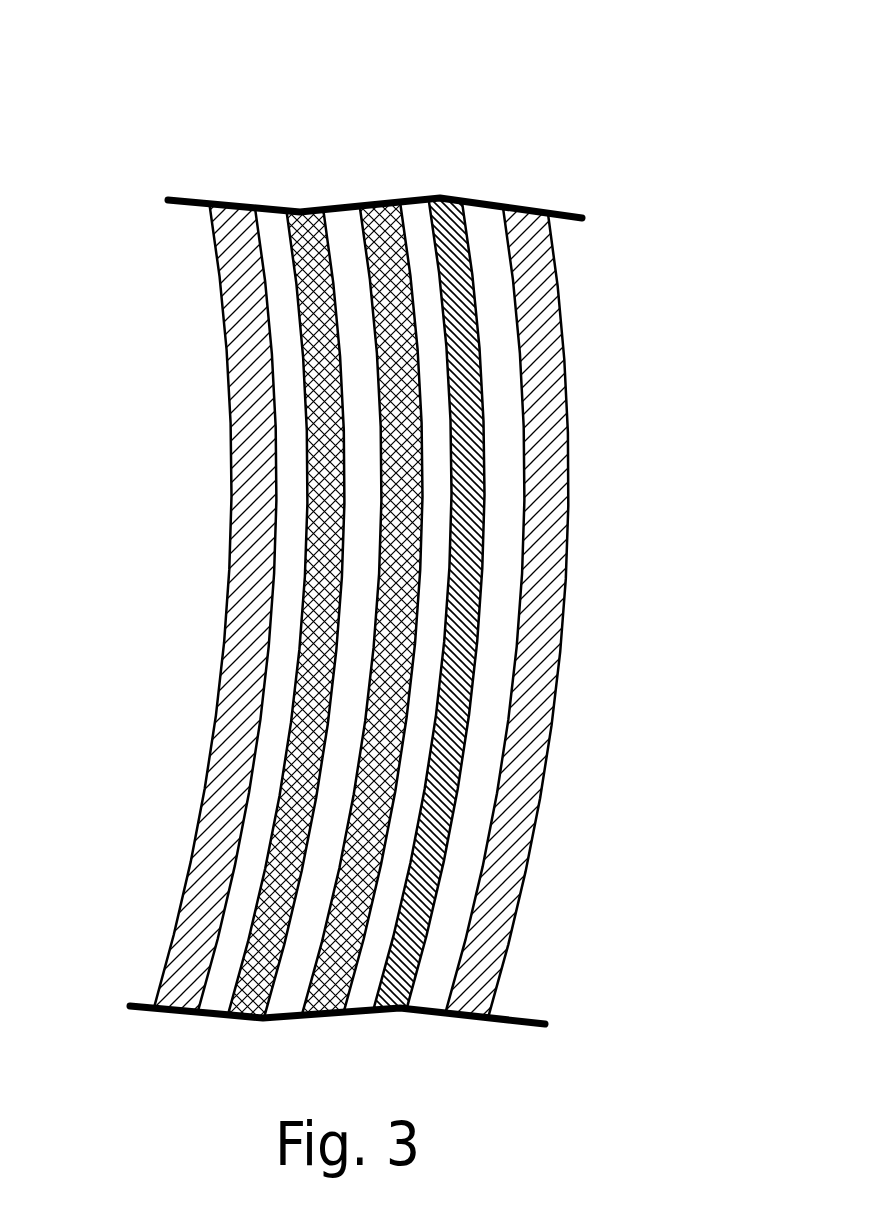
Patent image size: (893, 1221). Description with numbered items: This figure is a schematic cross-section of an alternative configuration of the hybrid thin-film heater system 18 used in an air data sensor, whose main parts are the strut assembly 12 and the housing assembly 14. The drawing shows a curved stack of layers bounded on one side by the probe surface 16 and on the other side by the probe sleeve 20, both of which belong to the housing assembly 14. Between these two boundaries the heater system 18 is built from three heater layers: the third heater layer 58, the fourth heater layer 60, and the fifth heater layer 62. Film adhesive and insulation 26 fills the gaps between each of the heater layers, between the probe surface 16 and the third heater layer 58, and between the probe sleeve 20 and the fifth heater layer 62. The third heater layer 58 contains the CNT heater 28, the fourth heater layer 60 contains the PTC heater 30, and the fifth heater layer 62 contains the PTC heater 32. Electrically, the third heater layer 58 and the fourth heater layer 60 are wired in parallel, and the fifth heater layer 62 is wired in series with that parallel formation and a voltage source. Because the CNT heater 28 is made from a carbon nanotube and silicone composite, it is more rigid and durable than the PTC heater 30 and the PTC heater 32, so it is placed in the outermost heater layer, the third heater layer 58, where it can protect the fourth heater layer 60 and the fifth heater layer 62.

The strut assembly 12 is at (426, 549).
The housing assembly 14 is at (652, 175).
The probe surface 16 is at (538, 330).
The hybrid thin-film heater system 18 is at (233, 175).
The probe sleeve 20 is at (243, 302).
The film adhesive and insulation 26 is at (480, 220).
The CNT heater 28 is at (455, 253).
The PTC heater 30 is at (400, 540).
The PTC heater 32 is at (300, 785).
The third heater layer 58 is at (378, 1015).
The fourth heater layer 60 is at (308, 1020).
The fifth heater layer 62 is at (236, 1025).